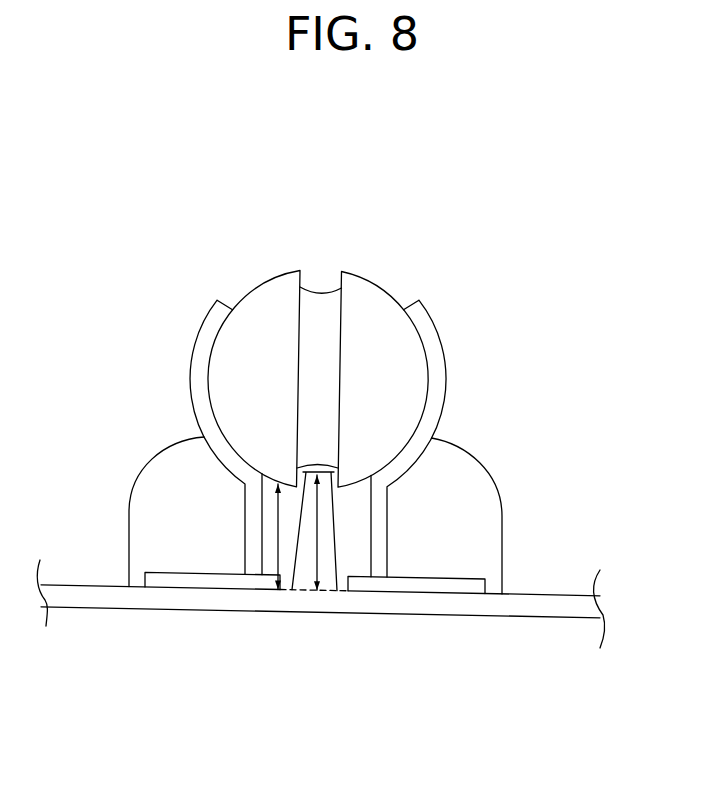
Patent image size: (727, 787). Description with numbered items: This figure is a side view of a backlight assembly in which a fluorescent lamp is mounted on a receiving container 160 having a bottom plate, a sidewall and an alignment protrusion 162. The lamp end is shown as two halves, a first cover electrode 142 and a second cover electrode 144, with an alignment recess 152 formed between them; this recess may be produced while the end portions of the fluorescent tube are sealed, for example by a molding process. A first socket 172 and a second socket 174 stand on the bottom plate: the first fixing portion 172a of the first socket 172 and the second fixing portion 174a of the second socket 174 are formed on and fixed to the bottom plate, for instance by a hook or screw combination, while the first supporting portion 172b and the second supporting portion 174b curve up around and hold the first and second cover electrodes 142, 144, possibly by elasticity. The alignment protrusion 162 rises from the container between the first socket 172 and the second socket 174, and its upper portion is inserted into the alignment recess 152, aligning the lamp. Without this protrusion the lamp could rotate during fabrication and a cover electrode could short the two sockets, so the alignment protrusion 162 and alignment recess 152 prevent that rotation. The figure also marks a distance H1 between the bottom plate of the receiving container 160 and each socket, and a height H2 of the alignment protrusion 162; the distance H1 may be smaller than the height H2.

The first cover electrode 142 is at (258, 310).
The second cover electrode 144 is at (383, 312).
The alignment recess 152 is at (318, 463).
The alignment protrusion 162 is at (328, 580).
The receiving container 160 is at (567, 608).
The first socket 172 is at (187, 591).
The first fixing portion 172a is at (245, 582).
The first supporting portion 172b is at (149, 568).
The second socket 174 is at (438, 593).
The second fixing portion 174a is at (385, 585).
The second supporting portion 174b is at (480, 571).
The distance H1 is at (278, 534).
The height H2 is at (317, 534).